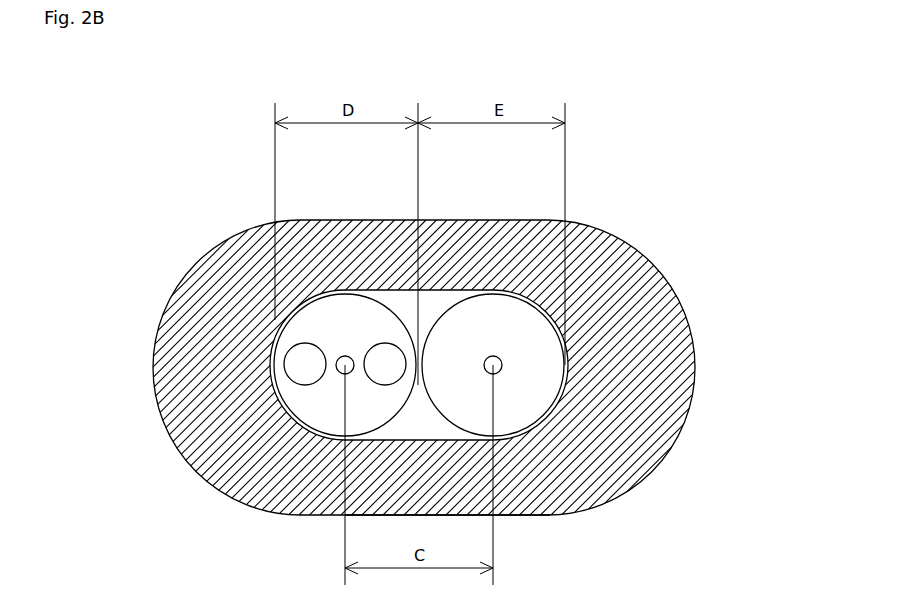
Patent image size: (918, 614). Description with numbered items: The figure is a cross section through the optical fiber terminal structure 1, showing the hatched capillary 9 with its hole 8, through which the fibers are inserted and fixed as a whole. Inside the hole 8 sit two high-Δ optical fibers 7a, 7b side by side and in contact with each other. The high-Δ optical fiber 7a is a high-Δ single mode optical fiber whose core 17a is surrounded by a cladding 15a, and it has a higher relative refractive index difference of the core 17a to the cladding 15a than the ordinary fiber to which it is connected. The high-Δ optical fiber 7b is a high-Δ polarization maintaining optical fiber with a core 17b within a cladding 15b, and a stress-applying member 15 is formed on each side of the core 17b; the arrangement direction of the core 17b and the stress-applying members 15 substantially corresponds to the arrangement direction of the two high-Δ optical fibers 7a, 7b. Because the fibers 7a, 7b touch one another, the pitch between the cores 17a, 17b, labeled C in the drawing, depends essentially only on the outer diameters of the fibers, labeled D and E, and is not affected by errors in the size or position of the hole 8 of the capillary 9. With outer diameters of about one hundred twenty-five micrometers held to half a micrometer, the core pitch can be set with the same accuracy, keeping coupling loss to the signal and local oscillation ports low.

The optical fiber terminal structure 1 is at (610, 160).
The capillary 9 is at (607, 250).
The stress-applying member 15 is at (273, 305).
The cladding 15a is at (546, 390).
The cladding 15b is at (300, 405).
The high-Δ optical fiber 7a is at (535, 412).
The high-Δ optical fiber 7b is at (320, 423).
The core 17a is at (496, 362).
The core 17b is at (303, 357).
The hole 8 is at (533, 423).